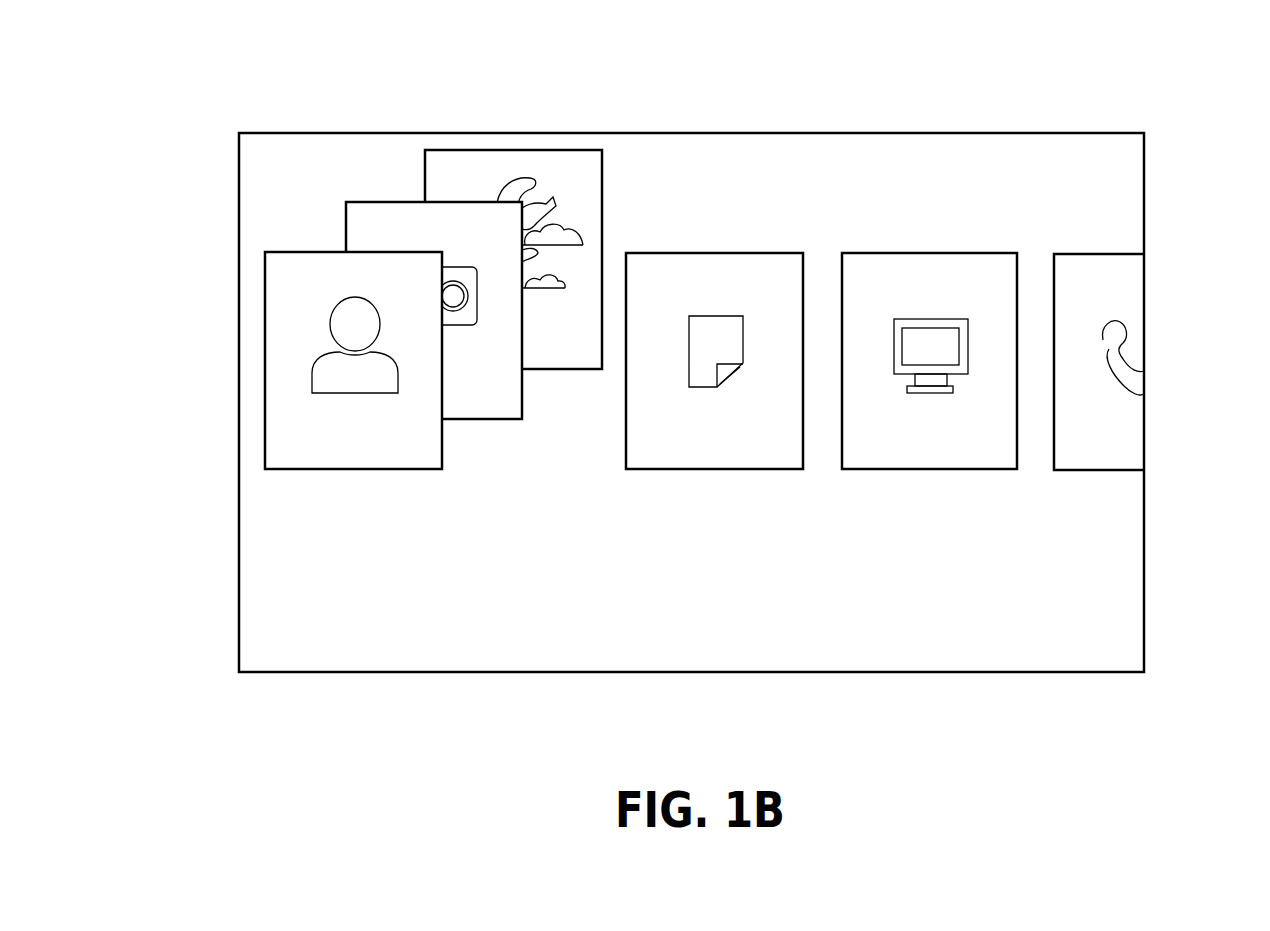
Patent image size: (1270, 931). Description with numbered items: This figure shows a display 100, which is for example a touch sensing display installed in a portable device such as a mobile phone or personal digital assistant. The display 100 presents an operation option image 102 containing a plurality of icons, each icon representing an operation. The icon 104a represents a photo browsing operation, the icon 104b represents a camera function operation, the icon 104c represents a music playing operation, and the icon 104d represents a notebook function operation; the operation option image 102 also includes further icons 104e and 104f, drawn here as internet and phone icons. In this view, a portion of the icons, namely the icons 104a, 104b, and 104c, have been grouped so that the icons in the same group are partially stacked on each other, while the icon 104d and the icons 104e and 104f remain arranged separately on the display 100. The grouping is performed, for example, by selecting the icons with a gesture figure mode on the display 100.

The display 100 is at (726, 398).
The operation option image 102 is at (722, 623).
The icon 104a is at (265, 368).
The icon 104b is at (347, 229).
The icon 104c is at (425, 173).
The icon 104d is at (717, 253).
The internet application icon 104e is at (930, 253).
The phone application icon 104f is at (1107, 254).